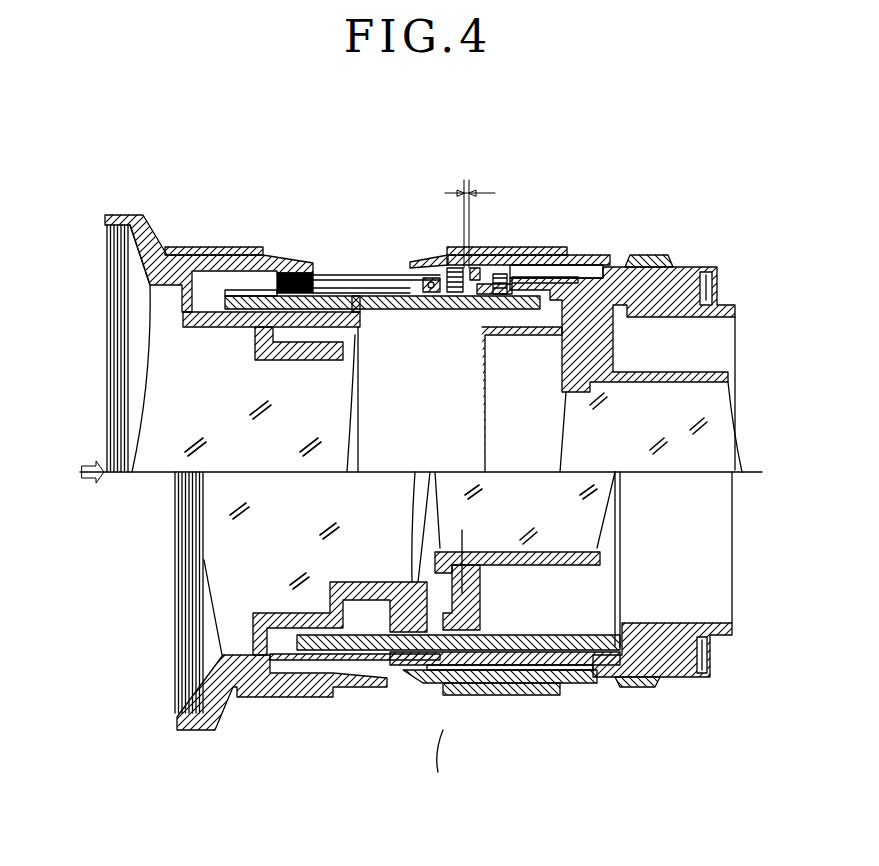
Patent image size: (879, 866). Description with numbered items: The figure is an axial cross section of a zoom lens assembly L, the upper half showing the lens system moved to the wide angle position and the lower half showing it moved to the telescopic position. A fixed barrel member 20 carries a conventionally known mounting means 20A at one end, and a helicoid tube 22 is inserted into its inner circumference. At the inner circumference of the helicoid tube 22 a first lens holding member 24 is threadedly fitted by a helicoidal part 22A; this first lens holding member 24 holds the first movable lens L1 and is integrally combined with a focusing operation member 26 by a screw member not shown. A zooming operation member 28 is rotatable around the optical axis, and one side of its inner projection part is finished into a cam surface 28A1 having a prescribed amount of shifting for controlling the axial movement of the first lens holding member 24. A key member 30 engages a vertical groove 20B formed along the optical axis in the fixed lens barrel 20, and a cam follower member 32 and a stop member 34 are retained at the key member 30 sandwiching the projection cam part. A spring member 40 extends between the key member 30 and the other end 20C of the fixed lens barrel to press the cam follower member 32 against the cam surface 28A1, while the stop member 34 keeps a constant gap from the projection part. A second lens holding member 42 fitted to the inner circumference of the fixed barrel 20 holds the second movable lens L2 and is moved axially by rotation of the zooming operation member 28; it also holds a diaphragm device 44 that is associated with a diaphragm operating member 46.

The fixed barrel member 20 is at (608, 266).
The mounting means 20A is at (717, 282).
The vertical groove 20B is at (558, 283).
The other end of the fixed lens barrel 20C is at (296, 272).
The helicoid tube 22 is at (270, 290).
The helicoidal part 22A is at (238, 298).
The first lens holding member 24 is at (346, 328).
The focusing operation member 26 is at (187, 254).
The zooming operation member 28 is at (545, 248).
The cam surface 28A1 is at (483, 248).
The key member 30 is at (467, 303).
The cam follower member 32 is at (504, 252).
The stop member 34 is at (427, 258).
The spring member 40 is at (320, 290).
The second lens holding member 42 is at (565, 337).
The diaphragm device 44 is at (482, 592).
The diaphragm operating member 46 is at (657, 254).
The zoom lens assembly L is at (446, 806).
The first movable lens L1 is at (146, 404).
The second movable lens L2 is at (728, 447).